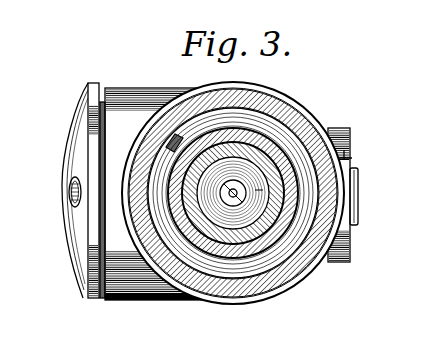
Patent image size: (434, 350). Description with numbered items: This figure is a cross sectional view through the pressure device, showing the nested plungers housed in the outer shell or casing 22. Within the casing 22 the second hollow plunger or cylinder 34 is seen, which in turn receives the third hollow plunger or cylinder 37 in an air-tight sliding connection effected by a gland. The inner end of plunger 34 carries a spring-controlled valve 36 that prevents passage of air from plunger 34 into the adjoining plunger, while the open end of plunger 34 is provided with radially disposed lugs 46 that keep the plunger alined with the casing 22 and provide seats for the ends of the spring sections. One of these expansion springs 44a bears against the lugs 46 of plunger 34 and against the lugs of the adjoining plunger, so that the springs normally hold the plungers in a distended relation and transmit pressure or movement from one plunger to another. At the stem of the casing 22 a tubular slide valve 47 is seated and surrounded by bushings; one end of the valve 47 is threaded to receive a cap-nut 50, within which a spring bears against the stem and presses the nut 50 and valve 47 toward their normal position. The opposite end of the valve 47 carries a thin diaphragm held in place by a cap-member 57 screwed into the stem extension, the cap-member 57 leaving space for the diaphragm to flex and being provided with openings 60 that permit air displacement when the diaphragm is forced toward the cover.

The outer shell or casing 22 is at (282, 290).
The second hollow plunger or cylinder 34 is at (277, 132).
The spring-controlled valve 36 is at (352, 158).
The third hollow plunger or cylinder 37 is at (190, 293).
The expansion spring 44a is at (178, 136).
The radially disposed lugs 46 is at (245, 120).
The tubular slide valve 47 is at (359, 197).
The cap-nut 50 is at (352, 260).
The cap-member 57 is at (97, 299).
The openings 60 is at (70, 256).